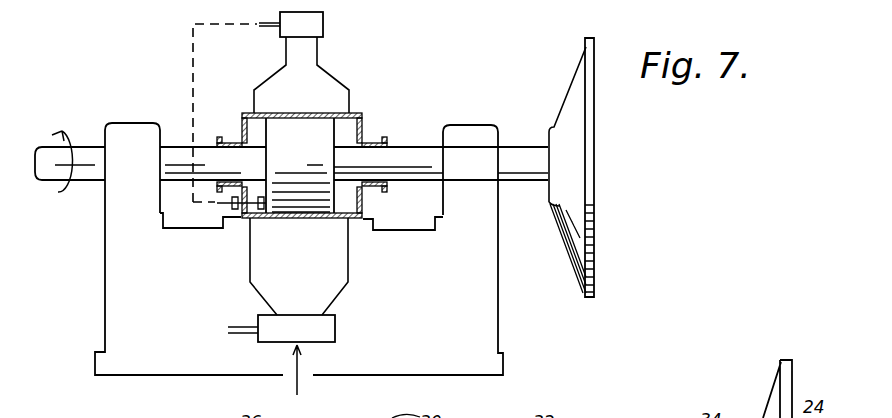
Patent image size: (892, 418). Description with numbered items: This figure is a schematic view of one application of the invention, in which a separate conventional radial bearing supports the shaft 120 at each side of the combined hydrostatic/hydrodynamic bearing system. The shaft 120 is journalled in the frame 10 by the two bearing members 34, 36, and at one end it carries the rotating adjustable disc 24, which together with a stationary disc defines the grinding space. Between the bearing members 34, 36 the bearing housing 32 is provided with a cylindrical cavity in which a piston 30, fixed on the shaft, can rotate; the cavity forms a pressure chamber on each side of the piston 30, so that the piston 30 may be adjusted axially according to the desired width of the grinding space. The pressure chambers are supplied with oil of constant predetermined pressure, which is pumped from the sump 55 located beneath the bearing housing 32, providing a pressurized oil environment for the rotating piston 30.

The frame 10 is at (105, 255).
The rotating adjustable disc 24 is at (590, 143).
The piston 30 is at (325, 138).
The bearing housing 32 is at (242, 117).
The bearing member 34 is at (475, 120).
The bearing member 36 is at (125, 135).
The sump 55 is at (328, 330).
The shaft 120 is at (526, 184).